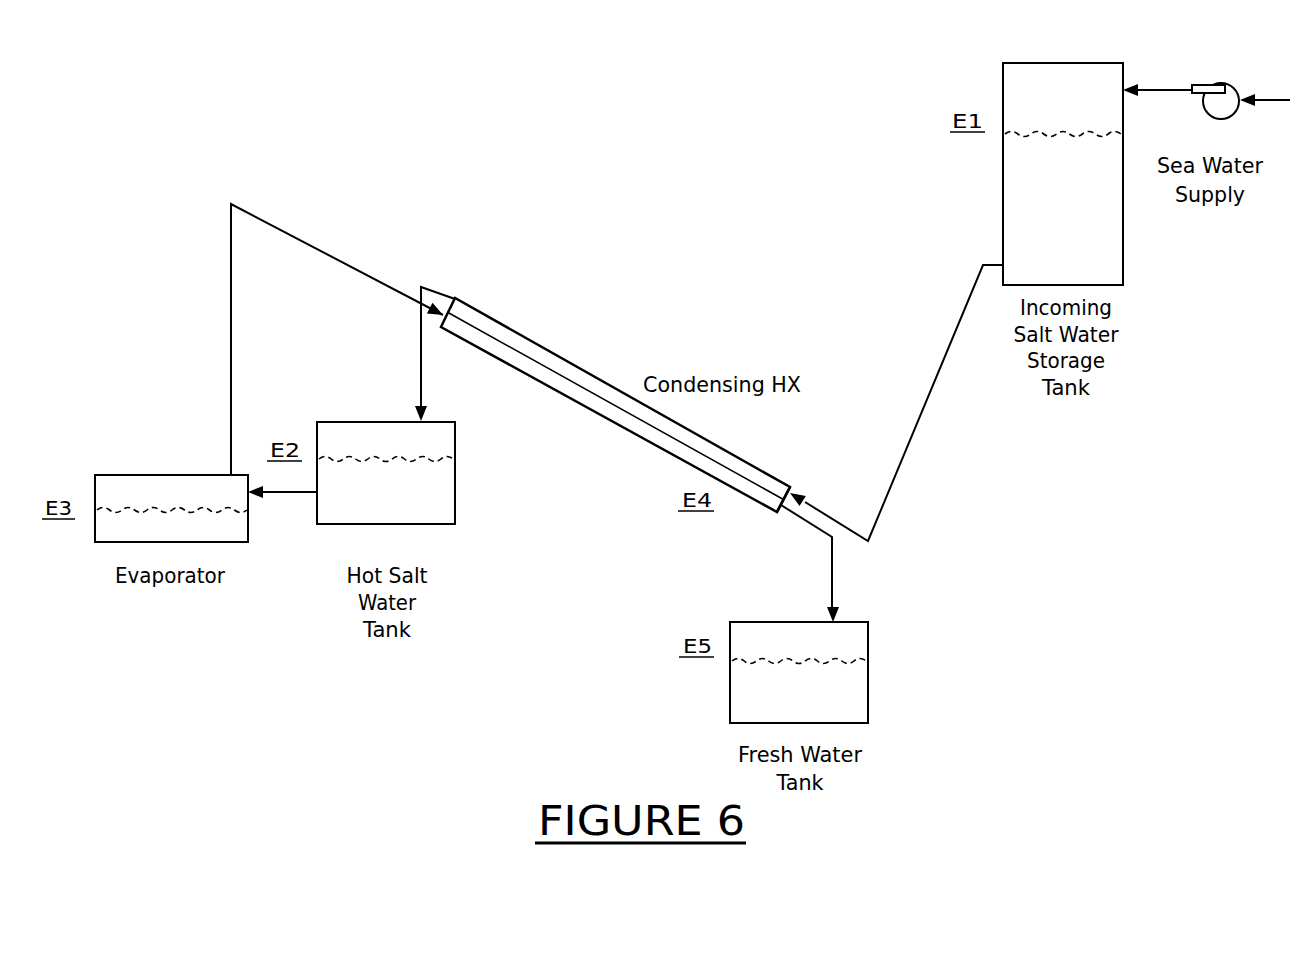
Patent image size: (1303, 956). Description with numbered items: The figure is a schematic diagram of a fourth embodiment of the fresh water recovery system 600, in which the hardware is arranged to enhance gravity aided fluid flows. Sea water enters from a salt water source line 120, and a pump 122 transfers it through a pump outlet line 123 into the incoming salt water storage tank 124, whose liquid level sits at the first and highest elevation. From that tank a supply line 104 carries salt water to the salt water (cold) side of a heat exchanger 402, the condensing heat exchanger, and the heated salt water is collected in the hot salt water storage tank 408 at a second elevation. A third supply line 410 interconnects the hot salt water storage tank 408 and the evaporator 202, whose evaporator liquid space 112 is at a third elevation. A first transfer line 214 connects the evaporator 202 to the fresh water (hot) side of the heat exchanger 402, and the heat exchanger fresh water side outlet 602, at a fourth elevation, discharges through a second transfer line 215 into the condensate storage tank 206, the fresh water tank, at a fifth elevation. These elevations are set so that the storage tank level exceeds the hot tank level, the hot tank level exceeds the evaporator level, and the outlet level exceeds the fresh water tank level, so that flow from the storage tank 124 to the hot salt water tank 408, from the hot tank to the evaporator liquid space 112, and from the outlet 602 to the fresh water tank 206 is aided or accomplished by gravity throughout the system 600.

The fresh water recovery system 600 is at (752, 170).
The evaporator liquid space 112 is at (122, 527).
The evaporator 202 is at (95, 483).
The first transfer line 214 is at (292, 235).
The heat exchanger 402 is at (498, 315).
The third supply line 410 is at (422, 382).
The hot salt water storage tank 408 is at (455, 500).
The supply line 104 is at (882, 517).
The heat exchanger fresh water side outlet 602 is at (777, 508).
The second transfer line 215 is at (835, 587).
The condensate storage tank 206 is at (870, 702).
The salt water storage tank 124 is at (1125, 260).
The pump outlet line 123 is at (1140, 88).
The pump 122 is at (1223, 108).
The salt water source line 120 is at (1262, 92).